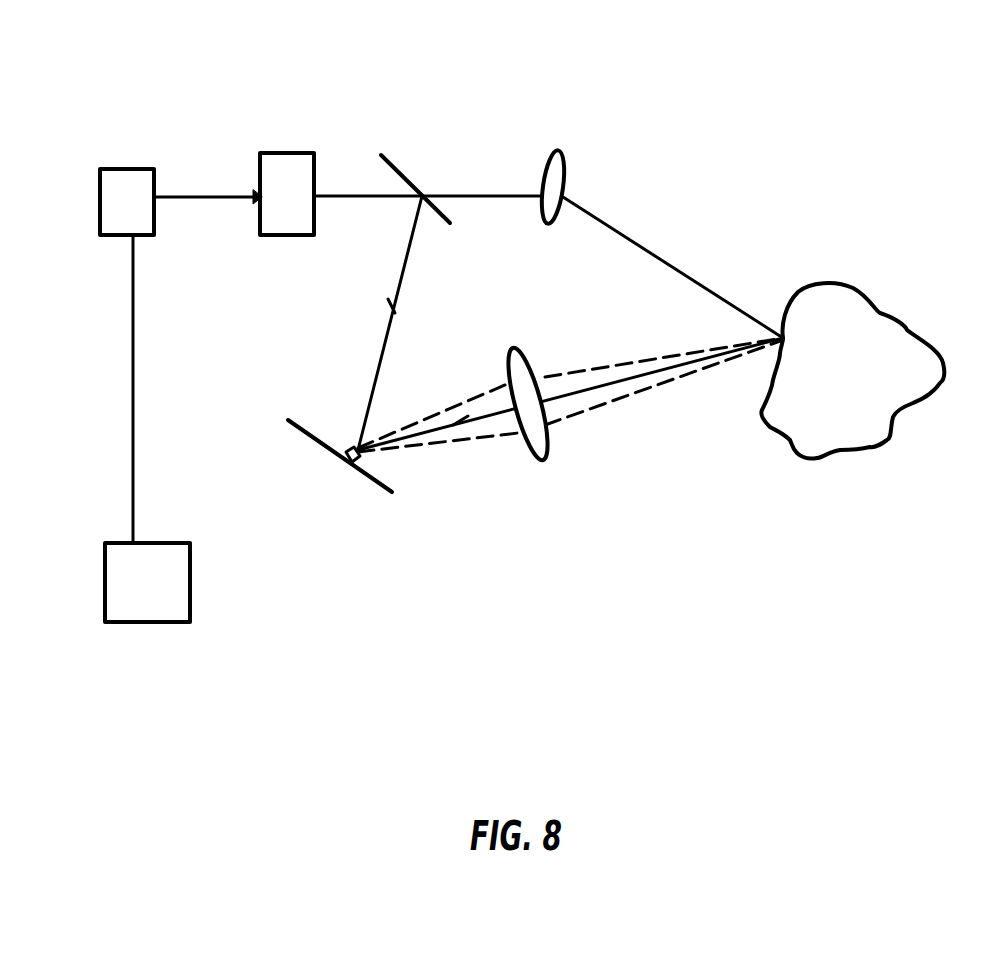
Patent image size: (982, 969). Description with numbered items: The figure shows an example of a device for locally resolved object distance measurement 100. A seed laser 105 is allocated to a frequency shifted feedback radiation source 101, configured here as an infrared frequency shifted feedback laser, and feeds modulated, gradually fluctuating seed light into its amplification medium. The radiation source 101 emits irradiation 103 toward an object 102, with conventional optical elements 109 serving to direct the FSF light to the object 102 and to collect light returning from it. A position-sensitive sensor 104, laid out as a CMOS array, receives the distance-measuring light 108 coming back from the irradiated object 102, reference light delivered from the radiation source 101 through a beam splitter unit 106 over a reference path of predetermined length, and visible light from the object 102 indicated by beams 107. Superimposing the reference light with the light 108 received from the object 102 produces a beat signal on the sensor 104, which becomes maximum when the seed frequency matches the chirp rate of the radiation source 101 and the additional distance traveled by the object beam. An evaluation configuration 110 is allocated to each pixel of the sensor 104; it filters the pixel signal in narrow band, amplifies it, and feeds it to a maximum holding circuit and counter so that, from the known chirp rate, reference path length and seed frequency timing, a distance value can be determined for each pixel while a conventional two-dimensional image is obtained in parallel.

The device for locally resolved object distance measurement 100 is at (626, 108).
The frequency shifted feedback radiation source 101 is at (290, 163).
The object 102 is at (865, 327).
The irradiation 103 is at (665, 256).
The position-sensitive sensor 104 is at (392, 492).
The seed laser 105 is at (121, 180).
The beam splitter unit 106 is at (397, 165).
The beams 107 is at (640, 392).
The light received from the irradiated object 108 is at (600, 387).
The conventional optical elements 109 is at (563, 172).
The evaluation configuration 110 is at (132, 605).